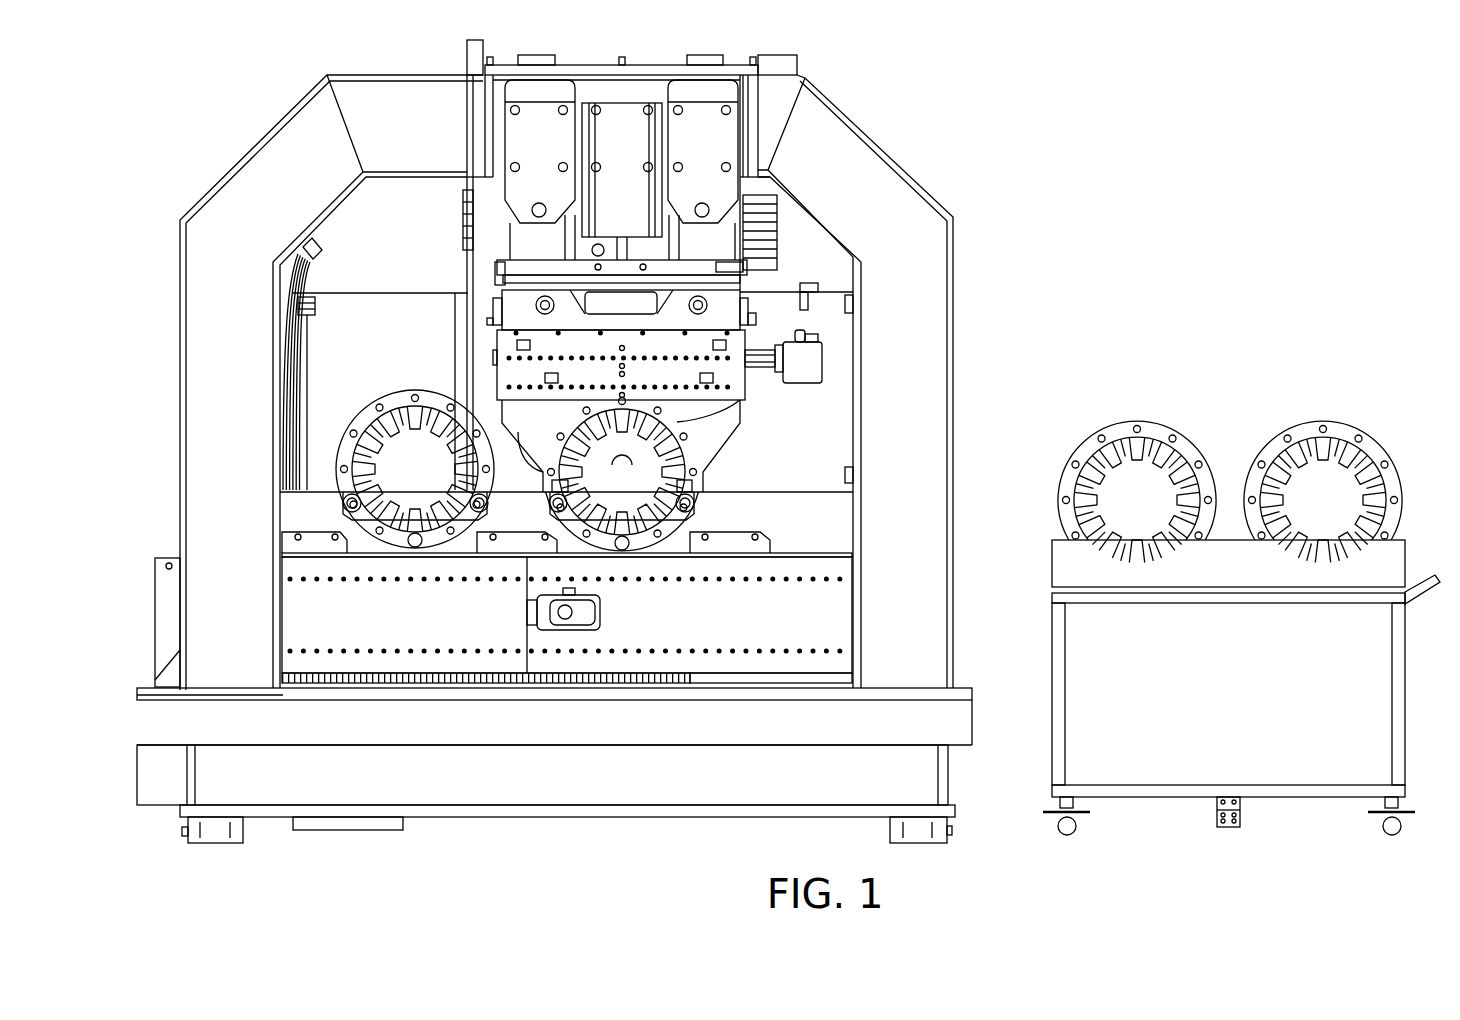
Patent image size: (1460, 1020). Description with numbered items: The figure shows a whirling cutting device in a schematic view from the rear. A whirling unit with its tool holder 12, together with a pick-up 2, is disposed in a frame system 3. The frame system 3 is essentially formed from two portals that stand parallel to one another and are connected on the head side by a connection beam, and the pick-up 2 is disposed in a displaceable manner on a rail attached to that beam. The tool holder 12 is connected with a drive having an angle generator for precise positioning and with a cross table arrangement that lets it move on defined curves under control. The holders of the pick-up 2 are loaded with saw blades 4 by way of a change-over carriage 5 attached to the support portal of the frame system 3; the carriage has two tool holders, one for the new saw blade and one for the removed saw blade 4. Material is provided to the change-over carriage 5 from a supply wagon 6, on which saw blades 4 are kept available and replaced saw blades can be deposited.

The pick-up 2 is at (718, 308).
The frame system 3 is at (872, 141).
The saw blades 4 is at (1173, 428).
The change-over carriage 5 is at (692, 540).
The supply wagon 6 is at (1143, 790).
The tool holder 12 is at (733, 427).